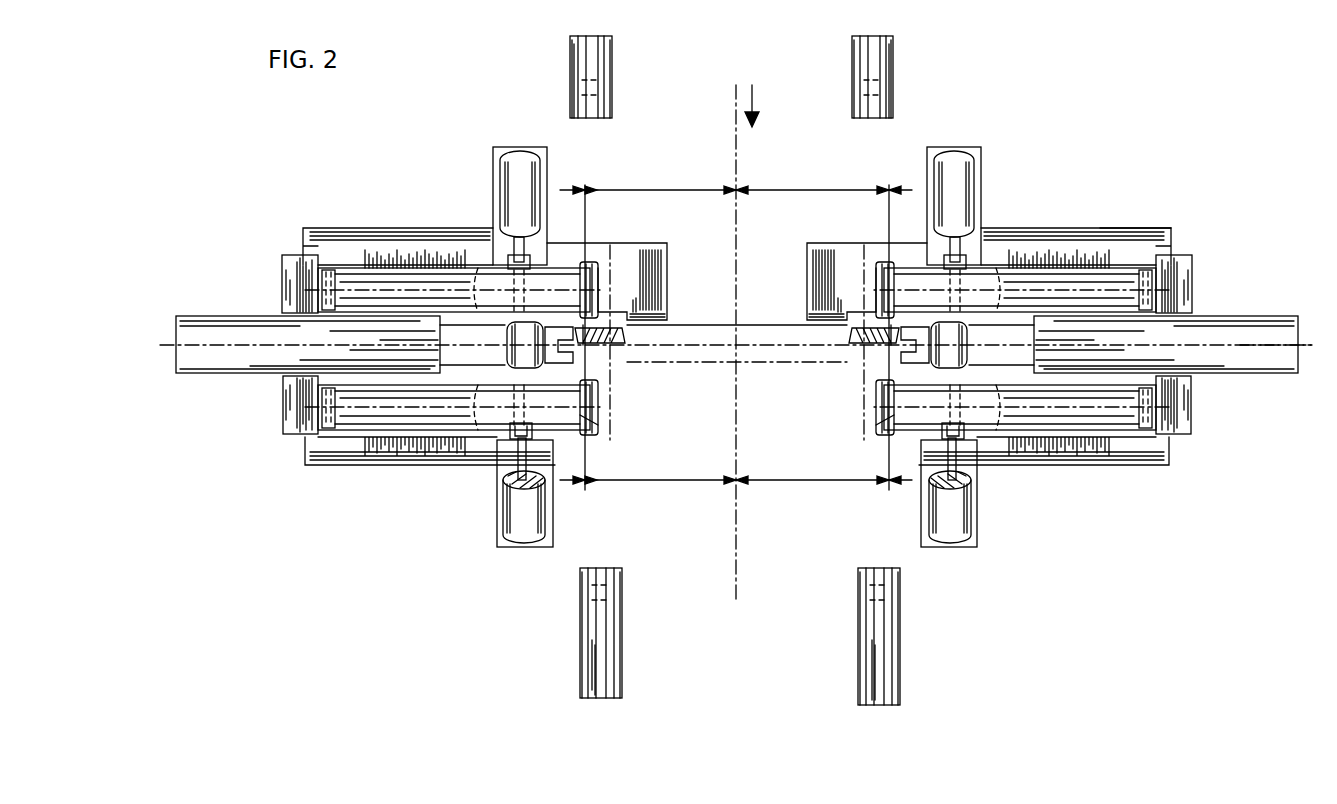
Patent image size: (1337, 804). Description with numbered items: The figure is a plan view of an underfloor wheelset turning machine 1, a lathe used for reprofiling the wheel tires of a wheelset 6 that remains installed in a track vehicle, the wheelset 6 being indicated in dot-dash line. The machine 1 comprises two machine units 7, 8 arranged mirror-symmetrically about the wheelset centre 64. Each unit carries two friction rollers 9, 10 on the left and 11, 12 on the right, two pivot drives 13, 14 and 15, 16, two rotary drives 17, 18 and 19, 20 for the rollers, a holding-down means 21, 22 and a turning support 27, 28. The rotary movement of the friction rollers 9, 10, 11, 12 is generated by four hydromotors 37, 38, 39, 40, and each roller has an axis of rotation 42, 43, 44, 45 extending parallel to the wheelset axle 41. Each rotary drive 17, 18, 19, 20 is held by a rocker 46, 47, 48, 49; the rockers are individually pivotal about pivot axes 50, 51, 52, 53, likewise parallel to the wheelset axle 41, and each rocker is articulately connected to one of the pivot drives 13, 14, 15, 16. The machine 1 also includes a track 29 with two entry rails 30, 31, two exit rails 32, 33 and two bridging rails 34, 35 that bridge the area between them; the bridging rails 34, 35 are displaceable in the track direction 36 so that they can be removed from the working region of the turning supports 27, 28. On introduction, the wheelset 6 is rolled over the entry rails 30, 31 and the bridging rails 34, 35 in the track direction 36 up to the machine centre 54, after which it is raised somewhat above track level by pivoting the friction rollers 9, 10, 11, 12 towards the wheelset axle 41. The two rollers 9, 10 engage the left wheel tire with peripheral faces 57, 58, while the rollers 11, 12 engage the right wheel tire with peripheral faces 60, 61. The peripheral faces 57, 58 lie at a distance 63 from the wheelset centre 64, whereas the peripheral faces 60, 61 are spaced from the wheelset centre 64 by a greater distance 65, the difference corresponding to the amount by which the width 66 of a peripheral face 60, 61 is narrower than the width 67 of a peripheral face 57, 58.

The underfloor wheelset turning machine 1 is at (1088, 228).
The wheelset 6 is at (737, 311).
The machine unit 7 is at (408, 329).
The machine unit 8 is at (1061, 329).
The friction roller 9 is at (611, 421).
The friction roller 10 is at (607, 341).
The friction roller 11 is at (855, 421).
The friction roller 12 is at (867, 341).
The pivot drive 13 is at (500, 485).
The pivot drive 14 is at (496, 192).
The pivot drive 15 is at (969, 485).
The pivot drive 16 is at (971, 190).
The rotary drive 17 is at (273, 412).
The rotary drive 18 is at (268, 272).
The rotary drive 19 is at (1196, 412).
The rotary drive 20 is at (1199, 272).
The holding-down means 21 is at (324, 331).
The holding-down means 22 is at (1149, 329).
The turning support 27 is at (609, 362).
The turning support 28 is at (859, 362).
The track 29 is at (612, 52).
The entry rail 30 is at (575, 60).
The entry rail 31 is at (892, 60).
The exit rail 32 is at (590, 660).
The exit rail 33 is at (888, 660).
The bridging rail 34 is at (607, 660).
The bridging rail 35 is at (870, 660).
The track direction 36 is at (752, 86).
The hydromotor 37 is at (290, 405).
The hydromotor 38 is at (288, 285).
The hydromotor 39 is at (1184, 404).
The hydromotor 40 is at (1186, 285).
The wheelset axle 41 is at (765, 338).
The axis of rotation 42 is at (478, 428).
The axis of rotation 43 is at (478, 290).
The axis of rotation 44 is at (1000, 430).
The axis of rotation 45 is at (990, 290).
The rocker 46 is at (330, 445).
The rocker 47 is at (340, 268).
The rocker 48 is at (1145, 445).
The rocker 49 is at (1118, 270).
The pivot axis 50 is at (395, 430).
The pivot axis 51 is at (395, 280).
The pivot axis 52 is at (1082, 430).
The pivot axis 53 is at (1050, 285).
The machine centre 54 is at (1300, 348).
The peripheral face 57 is at (586, 436).
The peripheral face 58 is at (580, 268).
The peripheral face 60 is at (888, 436).
The peripheral face 61 is at (893, 262).
The distance 63 is at (665, 188).
The wheelset centre 64 is at (740, 582).
The distance 65 is at (803, 188).
The width 66 is at (888, 188).
The width 67 is at (585, 188).